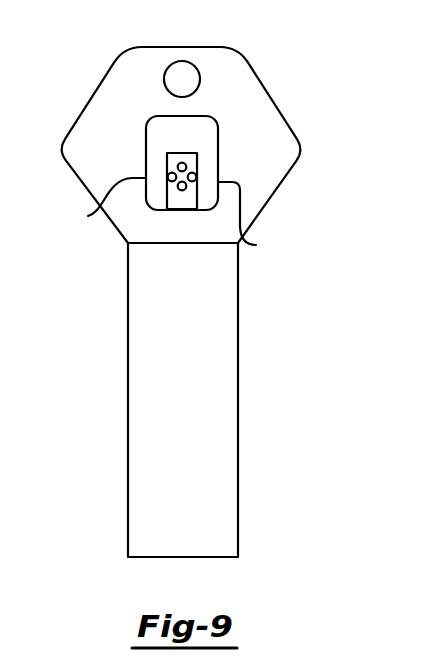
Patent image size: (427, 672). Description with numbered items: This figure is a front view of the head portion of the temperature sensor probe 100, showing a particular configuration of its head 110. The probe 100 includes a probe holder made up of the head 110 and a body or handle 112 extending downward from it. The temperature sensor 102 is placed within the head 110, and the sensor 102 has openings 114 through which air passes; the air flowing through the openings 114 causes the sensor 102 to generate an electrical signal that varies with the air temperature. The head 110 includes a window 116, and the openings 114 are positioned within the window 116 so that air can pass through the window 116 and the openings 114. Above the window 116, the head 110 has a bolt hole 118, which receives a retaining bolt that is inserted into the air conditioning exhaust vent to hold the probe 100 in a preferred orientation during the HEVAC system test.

The temperature sensor probe 100 is at (208, 282).
The temperature sensor 102 is at (88, 216).
The head 110 is at (282, 183).
The body or handle 112 is at (238, 370).
The openings 114 is at (164, 116).
The window 116 is at (256, 245).
The bolt hole 118 is at (174, 61).